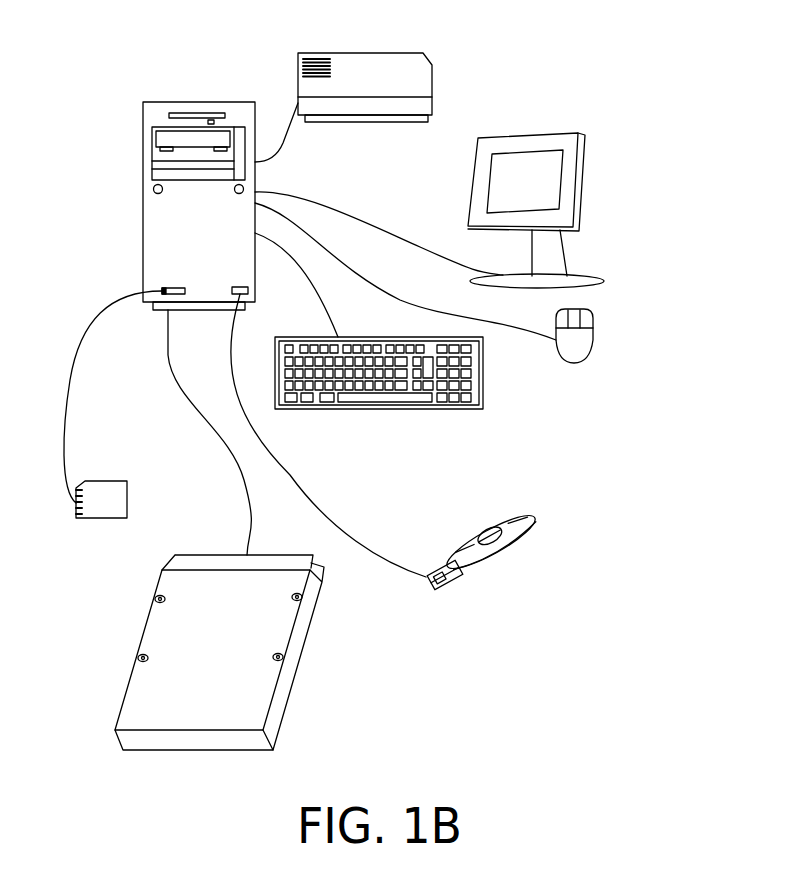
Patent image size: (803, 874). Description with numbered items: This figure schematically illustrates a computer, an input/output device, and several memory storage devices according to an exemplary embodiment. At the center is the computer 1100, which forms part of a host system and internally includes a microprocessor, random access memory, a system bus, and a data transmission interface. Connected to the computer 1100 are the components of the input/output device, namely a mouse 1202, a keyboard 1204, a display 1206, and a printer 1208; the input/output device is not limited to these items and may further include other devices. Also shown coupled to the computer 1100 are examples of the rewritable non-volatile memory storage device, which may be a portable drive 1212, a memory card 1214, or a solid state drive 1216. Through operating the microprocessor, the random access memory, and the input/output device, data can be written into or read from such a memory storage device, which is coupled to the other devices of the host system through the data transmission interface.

The computer 1100 is at (200, 102).
The printer 1208 is at (363, 53).
The display 1206 is at (537, 134).
The mouse 1202 is at (593, 340).
The keyboard 1204 is at (485, 387).
The memory card 1214 is at (127, 489).
The solid state drive 1216 is at (270, 545).
The portable drive 1212 is at (478, 538).